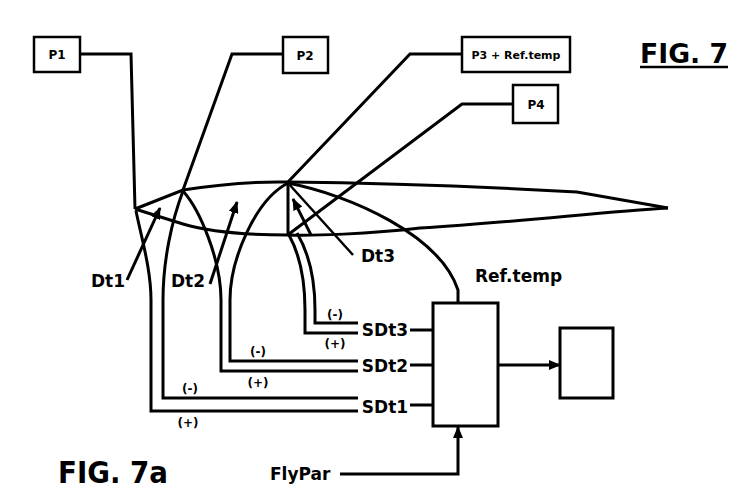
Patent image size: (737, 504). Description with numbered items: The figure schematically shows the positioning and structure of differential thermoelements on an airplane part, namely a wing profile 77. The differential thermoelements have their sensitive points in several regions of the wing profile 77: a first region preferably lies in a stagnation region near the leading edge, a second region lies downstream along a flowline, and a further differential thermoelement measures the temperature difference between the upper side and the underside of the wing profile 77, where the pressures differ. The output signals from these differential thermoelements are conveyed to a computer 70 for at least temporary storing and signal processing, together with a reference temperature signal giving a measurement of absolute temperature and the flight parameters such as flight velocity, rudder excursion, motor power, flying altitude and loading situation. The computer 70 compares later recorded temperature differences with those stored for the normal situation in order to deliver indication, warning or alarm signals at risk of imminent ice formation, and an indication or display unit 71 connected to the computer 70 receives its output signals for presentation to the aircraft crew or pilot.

In FIG. 7, the wing profile 77 is at (577, 191).
In FIG. 7A, the computer 70 is at (481, 426).
In FIG. 7A, the indication or display unit 71 is at (602, 399).